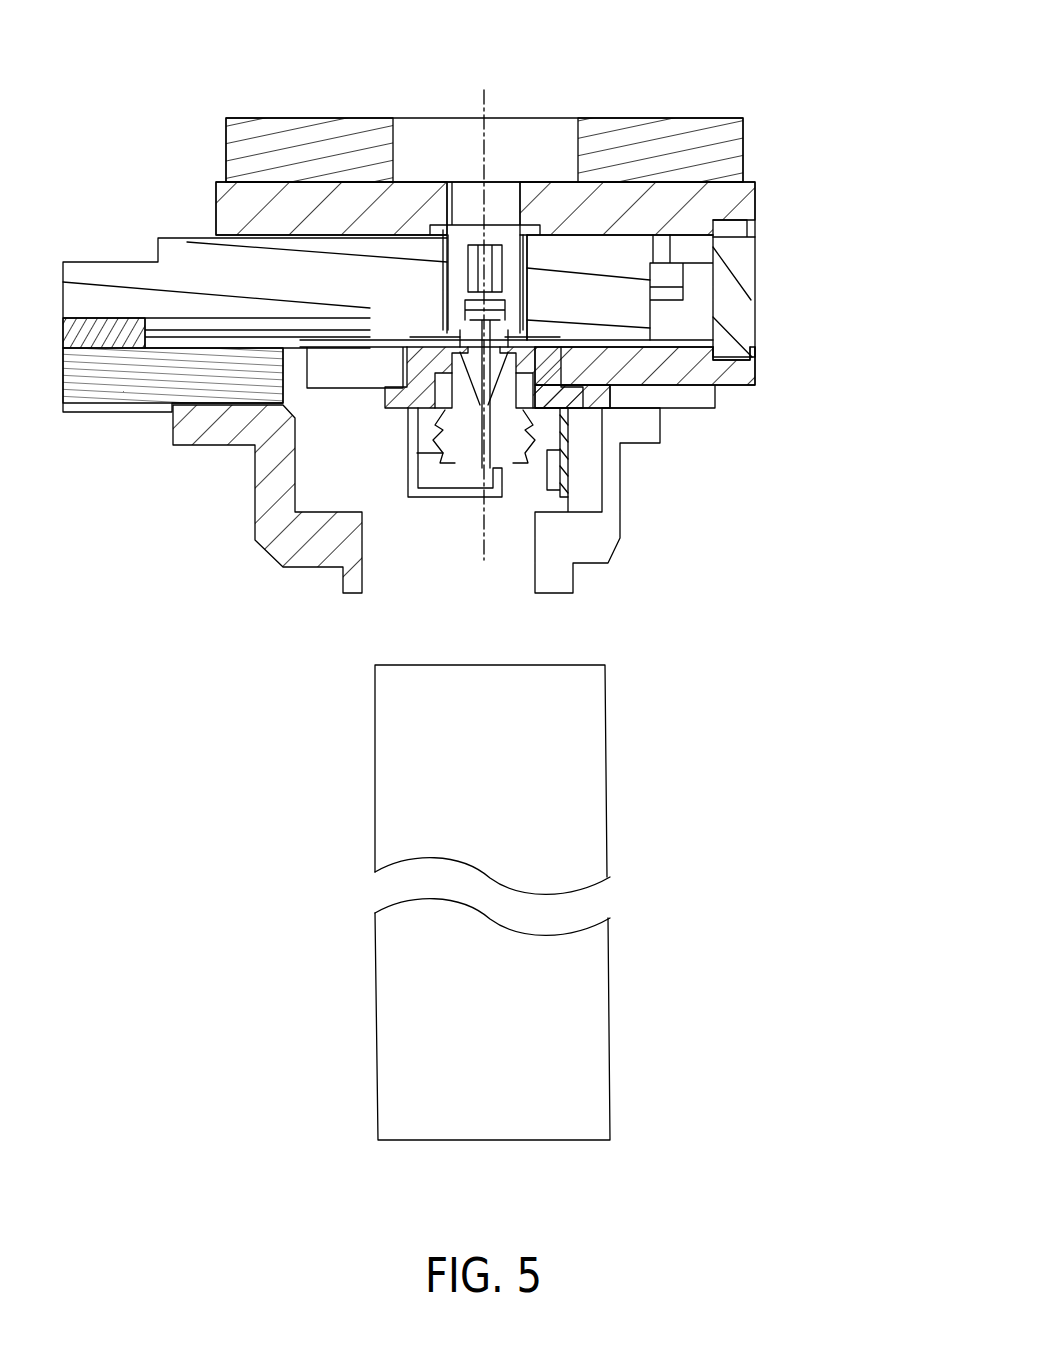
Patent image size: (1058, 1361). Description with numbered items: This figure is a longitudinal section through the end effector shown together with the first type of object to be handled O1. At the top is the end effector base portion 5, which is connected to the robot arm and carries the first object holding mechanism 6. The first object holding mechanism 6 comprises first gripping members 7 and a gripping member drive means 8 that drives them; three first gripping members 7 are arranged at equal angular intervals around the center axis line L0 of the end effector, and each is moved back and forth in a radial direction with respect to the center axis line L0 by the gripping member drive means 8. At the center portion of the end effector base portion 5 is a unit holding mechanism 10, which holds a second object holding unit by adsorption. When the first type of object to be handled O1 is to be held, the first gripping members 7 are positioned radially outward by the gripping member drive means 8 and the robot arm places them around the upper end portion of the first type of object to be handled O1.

The end effector base portion 5 is at (608, 117).
The first object holding mechanism 6 is at (446, 389).
The gripping member drive means 8 is at (113, 268).
The first gripping members 7 is at (258, 512).
The unit holding mechanism 10 is at (463, 462).
The center axis line L0 is at (485, 540).
The first type of object to be handled O1 is at (608, 753).